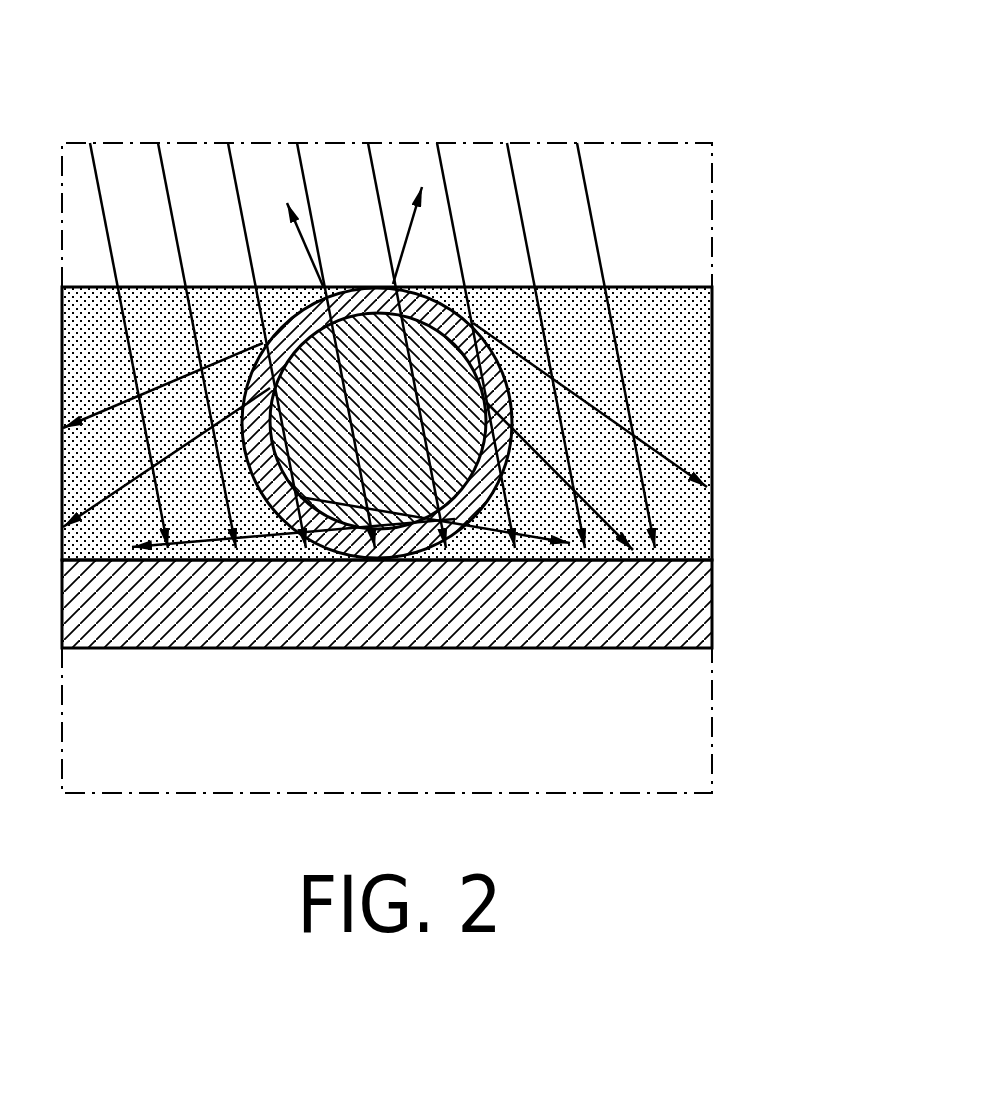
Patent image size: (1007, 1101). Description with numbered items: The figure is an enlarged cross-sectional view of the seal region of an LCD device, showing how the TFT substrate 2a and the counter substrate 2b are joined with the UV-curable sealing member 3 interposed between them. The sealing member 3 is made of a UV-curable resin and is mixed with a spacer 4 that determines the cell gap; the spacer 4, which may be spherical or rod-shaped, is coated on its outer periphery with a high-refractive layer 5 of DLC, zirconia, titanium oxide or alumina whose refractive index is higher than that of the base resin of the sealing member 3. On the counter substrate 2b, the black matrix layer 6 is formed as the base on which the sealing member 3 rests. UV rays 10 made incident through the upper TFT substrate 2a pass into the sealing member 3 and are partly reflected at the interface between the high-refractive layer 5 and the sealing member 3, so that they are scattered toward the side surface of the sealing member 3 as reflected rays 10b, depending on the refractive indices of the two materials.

The UV rays 10 is at (170, 192).
The reflected rays 10b is at (423, 200).
The TFT substrate 2a is at (672, 210).
The counter substrate 2b is at (673, 743).
The UV-curable sealing member 3 is at (673, 530).
The spacer 4 is at (420, 333).
The high-refractive layer 5 is at (503, 370).
The black matrix layer 6 is at (673, 617).